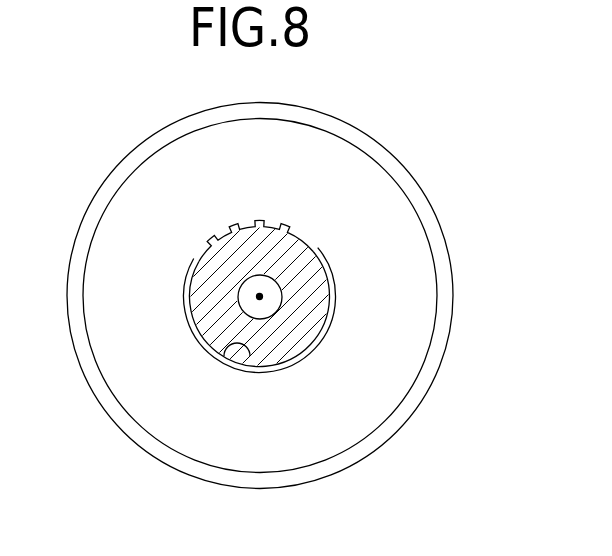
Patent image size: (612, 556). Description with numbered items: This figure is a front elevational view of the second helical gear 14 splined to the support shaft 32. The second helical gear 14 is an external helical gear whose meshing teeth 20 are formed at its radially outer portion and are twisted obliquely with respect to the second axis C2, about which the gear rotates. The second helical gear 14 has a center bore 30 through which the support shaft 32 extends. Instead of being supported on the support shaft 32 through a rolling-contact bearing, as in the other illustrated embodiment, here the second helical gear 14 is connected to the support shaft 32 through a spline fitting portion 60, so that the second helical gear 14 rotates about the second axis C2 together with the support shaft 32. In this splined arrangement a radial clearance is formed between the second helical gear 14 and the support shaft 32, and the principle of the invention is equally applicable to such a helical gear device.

The second helical gear 14 is at (122, 143).
The meshing teeth 20 is at (410, 407).
The center bore 30 is at (255, 362).
The support shaft 32 is at (305, 262).
The spline fitting portion 60 is at (184, 323).
The second axis C2 is at (262, 298).